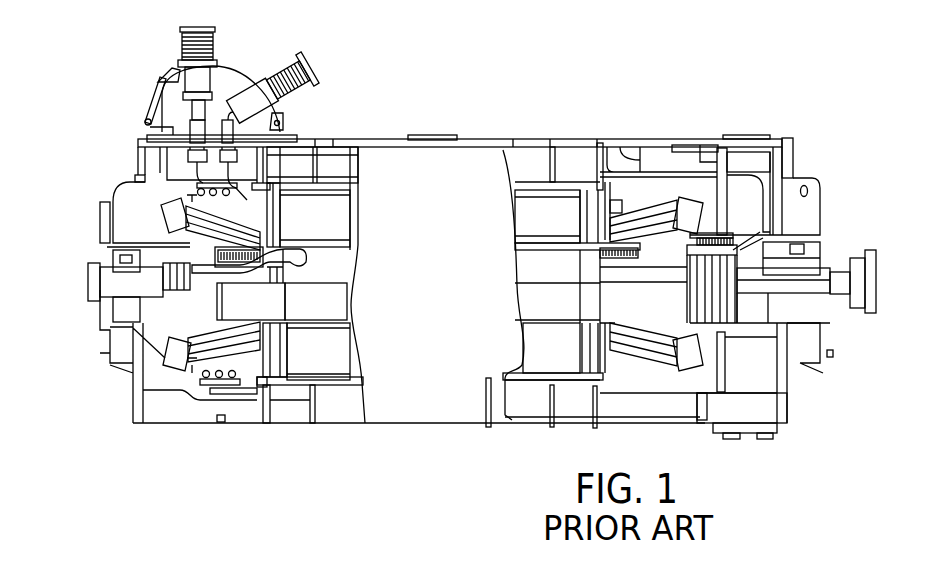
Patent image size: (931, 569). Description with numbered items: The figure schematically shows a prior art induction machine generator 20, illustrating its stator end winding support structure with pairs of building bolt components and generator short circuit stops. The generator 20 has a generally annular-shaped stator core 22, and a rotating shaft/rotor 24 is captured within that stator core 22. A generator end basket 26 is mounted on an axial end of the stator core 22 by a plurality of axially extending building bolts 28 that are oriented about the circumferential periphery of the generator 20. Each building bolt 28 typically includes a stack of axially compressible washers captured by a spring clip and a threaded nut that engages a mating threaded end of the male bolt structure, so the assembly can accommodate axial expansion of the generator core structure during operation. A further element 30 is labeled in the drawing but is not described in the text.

The induction machine generator 20 is at (412, 466).
The stator core 22 is at (327, 212).
The rotating shaft/rotor 24 is at (77, 274).
The generator end basket 26 is at (154, 378).
The building bolts 28 is at (247, 193).
The rotor end winding 30 is at (213, 363).